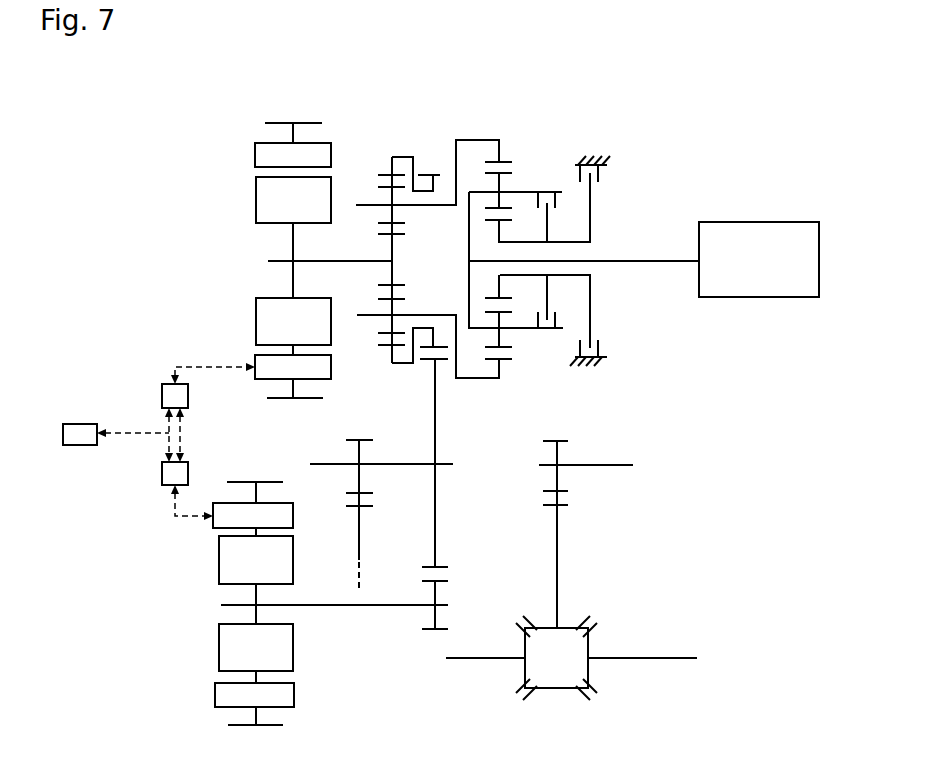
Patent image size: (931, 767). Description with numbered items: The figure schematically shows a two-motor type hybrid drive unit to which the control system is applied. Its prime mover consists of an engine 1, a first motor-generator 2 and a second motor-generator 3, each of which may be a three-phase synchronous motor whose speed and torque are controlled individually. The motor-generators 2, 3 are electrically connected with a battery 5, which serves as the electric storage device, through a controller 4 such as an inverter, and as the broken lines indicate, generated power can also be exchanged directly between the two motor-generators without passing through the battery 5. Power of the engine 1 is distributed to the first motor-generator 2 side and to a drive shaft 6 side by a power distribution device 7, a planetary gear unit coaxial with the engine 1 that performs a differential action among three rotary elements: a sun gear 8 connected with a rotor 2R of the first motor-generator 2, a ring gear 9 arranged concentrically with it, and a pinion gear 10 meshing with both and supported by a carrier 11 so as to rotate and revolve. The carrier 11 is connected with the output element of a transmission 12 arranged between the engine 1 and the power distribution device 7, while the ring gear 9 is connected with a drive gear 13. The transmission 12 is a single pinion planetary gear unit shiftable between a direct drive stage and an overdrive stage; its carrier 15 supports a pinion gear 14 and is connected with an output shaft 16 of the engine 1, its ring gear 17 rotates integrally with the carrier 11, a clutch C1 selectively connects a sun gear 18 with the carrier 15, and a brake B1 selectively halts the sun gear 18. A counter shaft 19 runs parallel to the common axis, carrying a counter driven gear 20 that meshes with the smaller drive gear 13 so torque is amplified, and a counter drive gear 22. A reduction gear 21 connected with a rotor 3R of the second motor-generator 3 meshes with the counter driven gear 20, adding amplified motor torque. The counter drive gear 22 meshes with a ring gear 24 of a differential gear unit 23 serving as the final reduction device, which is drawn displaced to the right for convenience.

The engine 1 is at (750, 222).
The first motor-generator 2 is at (231, 181).
The rotor of the first motor-generator 2R is at (256, 210).
The second motor-generator 3 is at (210, 590).
The rotor of the second motor-generator 3R is at (219, 655).
The controller 4 is at (162, 398).
The battery 5 is at (77, 424).
The drive shaft 6 is at (663, 658).
The power distribution device 7 is at (405, 132).
The sun gear 8 is at (394, 236).
The ring gear 9 is at (383, 176).
The pinion gear 10 is at (403, 223).
The carrier 11 is at (448, 205).
The transmission 12 is at (530, 103).
The drive gear 13 is at (430, 175).
The pinion gear 14 is at (508, 208).
The carrier 15 is at (517, 192).
The output shaft 16 is at (640, 261).
The ring gear 17 is at (503, 160).
The sun gear 18 is at (493, 222).
The counter shaft 19 is at (402, 464).
The counter driven gear 20 is at (440, 360).
The reduction gear 21 is at (440, 583).
The counter drive gear 22 is at (355, 440).
The differential gear unit 23 is at (576, 602).
The ring gear 24 is at (562, 507).
The brake B1 is at (590, 248).
The clutch C1 is at (548, 248).